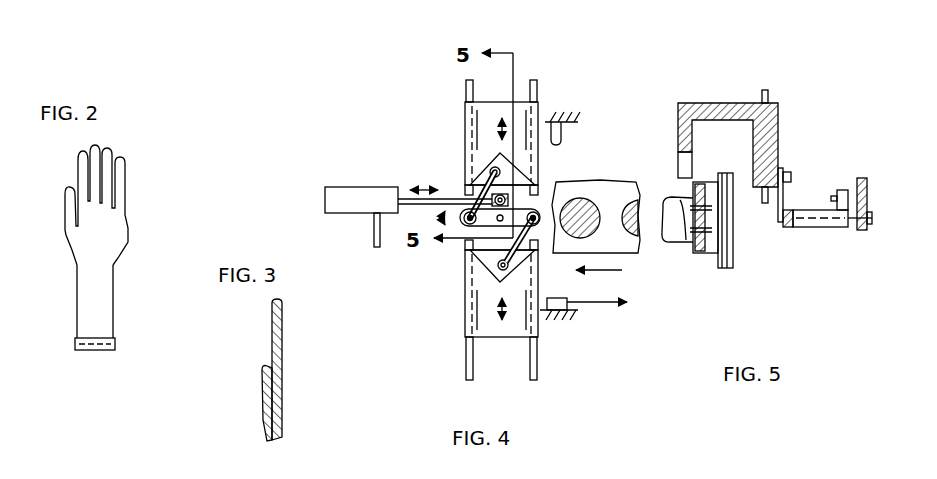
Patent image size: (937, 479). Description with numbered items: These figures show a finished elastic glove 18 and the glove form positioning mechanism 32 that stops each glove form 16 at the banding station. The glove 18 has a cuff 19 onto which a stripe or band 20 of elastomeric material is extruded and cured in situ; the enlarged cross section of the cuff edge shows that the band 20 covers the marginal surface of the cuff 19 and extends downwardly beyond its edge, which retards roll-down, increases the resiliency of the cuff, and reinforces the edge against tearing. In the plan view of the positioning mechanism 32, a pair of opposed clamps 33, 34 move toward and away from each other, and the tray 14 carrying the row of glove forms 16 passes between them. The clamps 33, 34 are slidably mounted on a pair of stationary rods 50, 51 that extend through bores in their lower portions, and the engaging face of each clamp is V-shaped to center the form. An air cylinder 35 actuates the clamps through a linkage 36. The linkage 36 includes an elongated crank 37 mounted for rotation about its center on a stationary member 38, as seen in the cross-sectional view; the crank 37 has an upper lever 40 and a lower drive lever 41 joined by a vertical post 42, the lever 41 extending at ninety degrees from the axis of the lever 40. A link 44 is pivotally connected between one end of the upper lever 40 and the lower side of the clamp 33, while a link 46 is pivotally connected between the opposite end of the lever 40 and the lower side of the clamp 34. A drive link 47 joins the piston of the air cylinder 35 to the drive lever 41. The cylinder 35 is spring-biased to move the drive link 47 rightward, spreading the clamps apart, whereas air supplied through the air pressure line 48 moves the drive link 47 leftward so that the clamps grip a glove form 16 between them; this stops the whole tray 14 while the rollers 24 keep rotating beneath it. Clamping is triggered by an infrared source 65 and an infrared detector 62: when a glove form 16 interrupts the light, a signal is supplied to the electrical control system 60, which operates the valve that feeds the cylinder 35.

In FIG. 5, the tray 14 is at (708, 255).
In FIG. 4, the glove form 16 is at (580, 197).
In FIG. 5, the glove form 16 is at (672, 242).
In FIG. 2, the elastic glove 18 is at (112, 240).
In FIG. 2, the cuff 19 is at (105, 296).
In FIG. 3, the cuff 19 is at (282, 340).
In FIG. 2, the band 20 is at (115, 345).
In FIG. 3, the band 20 is at (262, 395).
In FIG. 5, the rollers 24 is at (724, 268).
In FIG. 4, the glove form positioning mechanism 32 is at (418, 76).
In FIG. 4, the clamp 33 is at (465, 133).
In FIG. 5, the clamp 33 is at (718, 103).
In FIG. 4, the clamp 34 is at (508, 330).
In FIG. 4, the air cylinder 35 is at (342, 192).
In FIG. 4, the linkage 36 is at (408, 163).
In FIG. 5, the crank 37 is at (812, 233).
In FIG. 5, the stationary member 38 is at (862, 178).
In FIG. 4, the upper lever 40 is at (488, 226).
In FIG. 5, the upper lever 40 is at (793, 227).
In FIG. 4, the lower drive lever 41 is at (540, 190).
In FIG. 5, the lower drive lever 41 is at (840, 190).
In FIG. 5, the vertical post 42 is at (818, 210).
In FIG. 4, the link 44 is at (492, 196).
In FIG. 5, the link 44 is at (783, 200).
In FIG. 4, the link 46 is at (505, 258).
In FIG. 4, the drive link 47 is at (420, 206).
In FIG. 4, the air pressure line 48 is at (374, 235).
In FIG. 4, the stationary rod 50 is at (466, 88).
In FIG. 5, the stationary rod 50 is at (768, 95).
In FIG. 4, the stationary rod 51 is at (537, 88).
In FIG. 4, the electrical control system 60 is at (610, 302).
In FIG. 4, the infrared detector 62 is at (560, 297).
In FIG. 4, the infrared source 65 is at (562, 135).